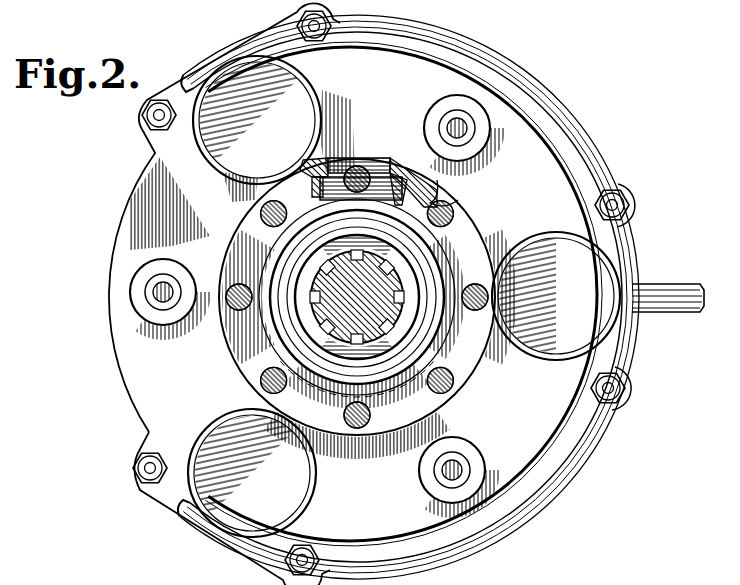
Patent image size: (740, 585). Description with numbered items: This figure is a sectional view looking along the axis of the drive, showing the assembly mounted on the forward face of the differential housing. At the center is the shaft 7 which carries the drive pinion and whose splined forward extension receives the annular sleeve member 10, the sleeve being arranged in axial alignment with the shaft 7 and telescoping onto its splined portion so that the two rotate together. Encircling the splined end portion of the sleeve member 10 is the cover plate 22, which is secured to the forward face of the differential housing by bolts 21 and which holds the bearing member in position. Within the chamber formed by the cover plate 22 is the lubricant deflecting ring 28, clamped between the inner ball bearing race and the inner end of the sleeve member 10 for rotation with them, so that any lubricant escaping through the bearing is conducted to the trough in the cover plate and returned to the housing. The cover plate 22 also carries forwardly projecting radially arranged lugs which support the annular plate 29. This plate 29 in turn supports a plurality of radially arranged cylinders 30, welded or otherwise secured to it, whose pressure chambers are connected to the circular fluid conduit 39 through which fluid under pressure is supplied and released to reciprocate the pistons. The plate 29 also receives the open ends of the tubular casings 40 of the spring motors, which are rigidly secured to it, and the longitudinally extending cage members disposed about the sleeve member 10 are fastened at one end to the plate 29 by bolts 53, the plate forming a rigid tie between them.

The shaft 7 is at (385, 292).
The annular sleeve member 10 is at (398, 248).
The bolts 21 is at (447, 207).
The cover plate 22 is at (462, 229).
The lubricant deflecting ring 28 is at (398, 168).
The annular plate 29 is at (123, 388).
The cylinders 30 is at (300, 90).
The circular fluid conduit 39 is at (512, 56).
The tubular casing 40 is at (166, 278).
The bolts 53 is at (302, 18).